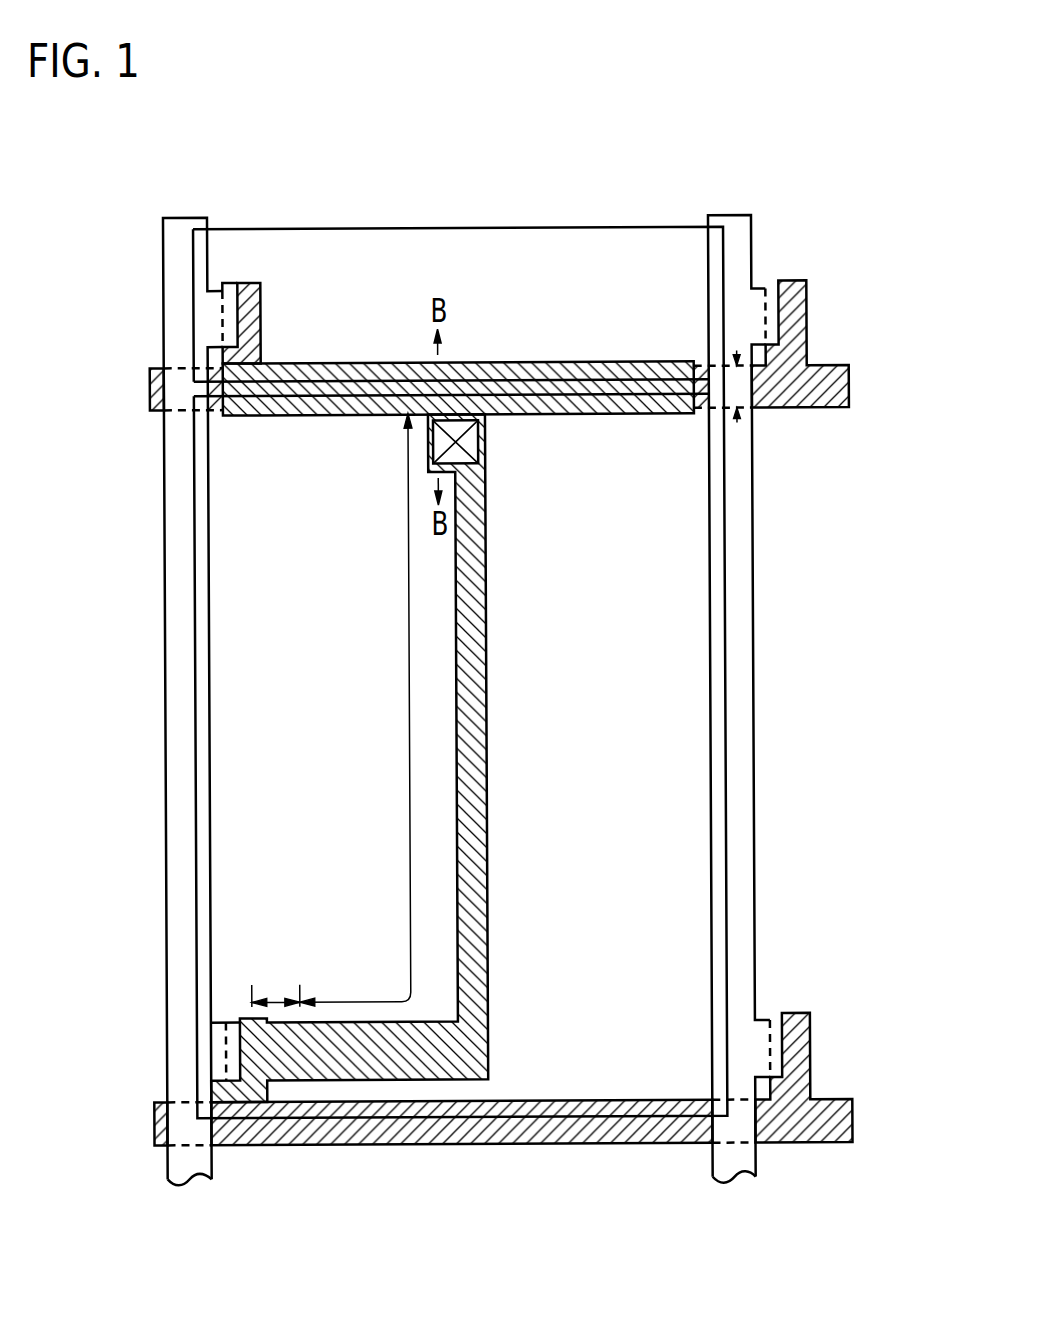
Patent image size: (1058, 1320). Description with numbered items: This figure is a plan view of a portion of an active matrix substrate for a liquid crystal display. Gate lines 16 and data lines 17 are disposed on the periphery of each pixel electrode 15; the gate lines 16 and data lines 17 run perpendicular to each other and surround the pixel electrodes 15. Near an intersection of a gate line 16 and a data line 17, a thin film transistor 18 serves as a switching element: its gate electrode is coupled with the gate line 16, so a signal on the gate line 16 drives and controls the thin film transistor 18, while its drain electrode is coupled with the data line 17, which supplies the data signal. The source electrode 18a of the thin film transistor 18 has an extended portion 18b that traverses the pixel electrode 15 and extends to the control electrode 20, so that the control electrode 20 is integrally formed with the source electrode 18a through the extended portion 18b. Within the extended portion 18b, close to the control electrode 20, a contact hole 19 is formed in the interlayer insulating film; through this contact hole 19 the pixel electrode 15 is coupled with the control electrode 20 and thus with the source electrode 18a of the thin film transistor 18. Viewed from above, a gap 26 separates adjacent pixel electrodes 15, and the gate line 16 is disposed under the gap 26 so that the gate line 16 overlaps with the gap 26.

The pixel electrode 15 is at (343, 240).
The gate line 16 is at (848, 375).
The data line 17 is at (184, 216).
The thin film transistor 18 is at (230, 1014).
The source electrode 18a is at (276, 1001).
The extended portion 18b is at (407, 648).
The contact hole 19 is at (483, 455).
The control electrode 20 is at (583, 362).
The gap 26 is at (737, 418).